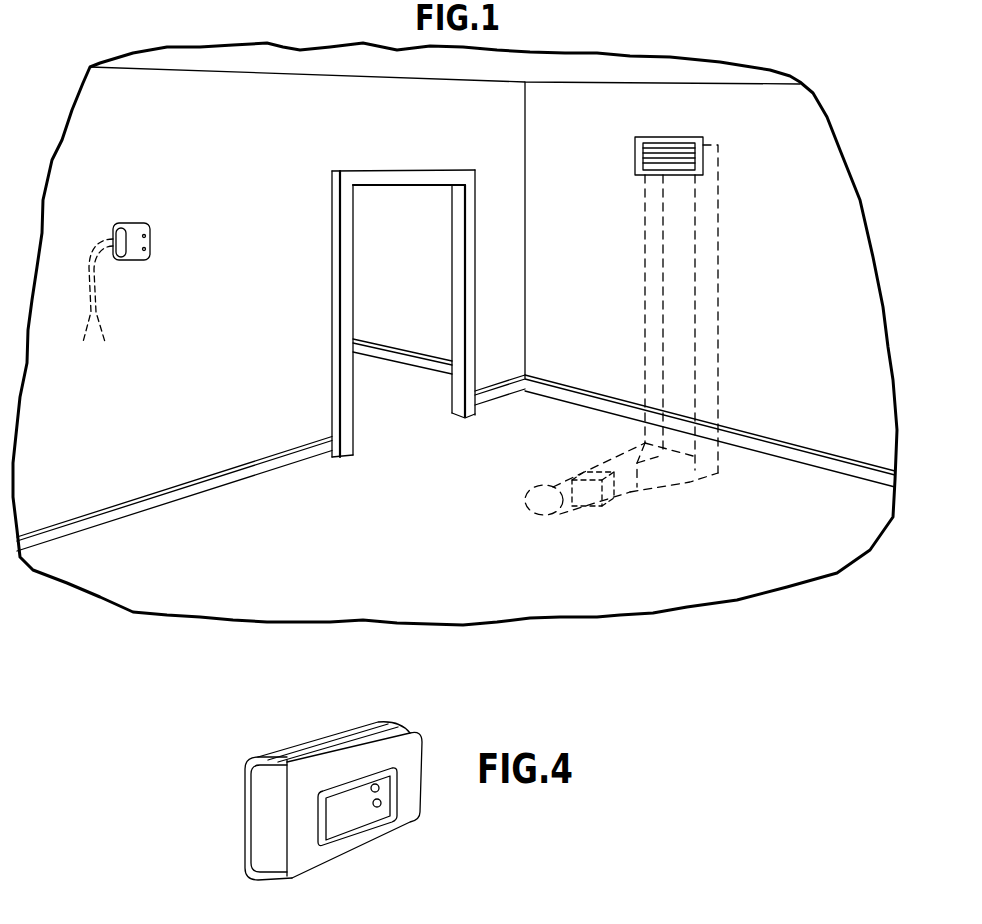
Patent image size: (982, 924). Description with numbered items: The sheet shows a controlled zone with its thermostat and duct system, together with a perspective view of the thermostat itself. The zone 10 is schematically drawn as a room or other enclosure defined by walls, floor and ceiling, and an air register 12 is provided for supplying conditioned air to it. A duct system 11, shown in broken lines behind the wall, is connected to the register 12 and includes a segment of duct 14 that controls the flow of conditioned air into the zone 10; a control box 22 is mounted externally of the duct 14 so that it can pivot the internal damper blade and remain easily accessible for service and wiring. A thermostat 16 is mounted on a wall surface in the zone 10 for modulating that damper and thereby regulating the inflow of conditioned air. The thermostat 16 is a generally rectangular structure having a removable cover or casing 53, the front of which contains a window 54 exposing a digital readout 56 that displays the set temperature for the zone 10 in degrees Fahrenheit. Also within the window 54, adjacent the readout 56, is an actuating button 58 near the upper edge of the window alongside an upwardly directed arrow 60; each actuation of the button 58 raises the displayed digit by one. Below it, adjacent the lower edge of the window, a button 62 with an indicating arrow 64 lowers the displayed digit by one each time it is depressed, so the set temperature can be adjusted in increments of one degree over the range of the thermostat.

In FIG. 1, the zone 10 is at (150, 578).
In FIG. 1, the duct system 11 is at (680, 495).
In FIG. 1, the air register 12 is at (689, 137).
In FIG. 1, the duct 14 is at (530, 511).
In FIG. 1, the thermostat 16 is at (161, 219).
In FIG. 4, the thermostat 16 is at (339, 804).
In FIG. 1, the control box 22 is at (592, 504).
In FIG. 4, the casing 53 is at (315, 852).
In FIG. 4, the window 54 is at (318, 822).
In FIG. 4, the digital readout 56 is at (353, 810).
In FIG. 4, the actuating button 58 is at (375, 784).
In FIG. 4, the upwardly directed arrow 60 is at (380, 788).
In FIG. 4, the button 62 is at (375, 808).
In FIG. 4, the indicating arrow 64 is at (383, 801).